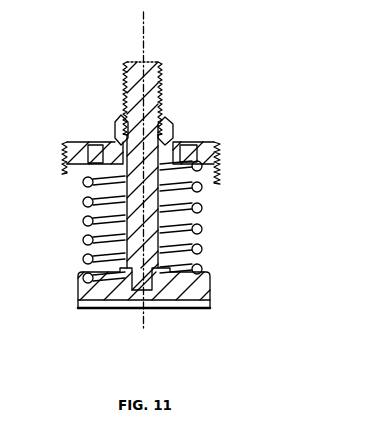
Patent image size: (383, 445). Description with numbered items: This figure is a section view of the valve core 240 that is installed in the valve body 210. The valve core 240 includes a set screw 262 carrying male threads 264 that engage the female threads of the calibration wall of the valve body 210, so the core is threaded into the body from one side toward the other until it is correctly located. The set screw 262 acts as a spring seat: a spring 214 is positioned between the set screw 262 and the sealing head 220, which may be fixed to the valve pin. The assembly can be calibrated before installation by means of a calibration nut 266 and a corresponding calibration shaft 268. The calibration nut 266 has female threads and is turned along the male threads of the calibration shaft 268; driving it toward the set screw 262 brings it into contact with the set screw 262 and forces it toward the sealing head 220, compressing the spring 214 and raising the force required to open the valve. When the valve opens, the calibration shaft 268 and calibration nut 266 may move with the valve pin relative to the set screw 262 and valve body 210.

The valve core 240 is at (80, 83).
The calibration shaft 268 is at (158, 64).
The calibration nut 266 is at (170, 120).
The set screw 262 is at (206, 147).
The male threads 264 is at (220, 162).
The valve body 210 is at (150, 219).
The spring 214 is at (202, 251).
The sealing head 220 is at (212, 296).